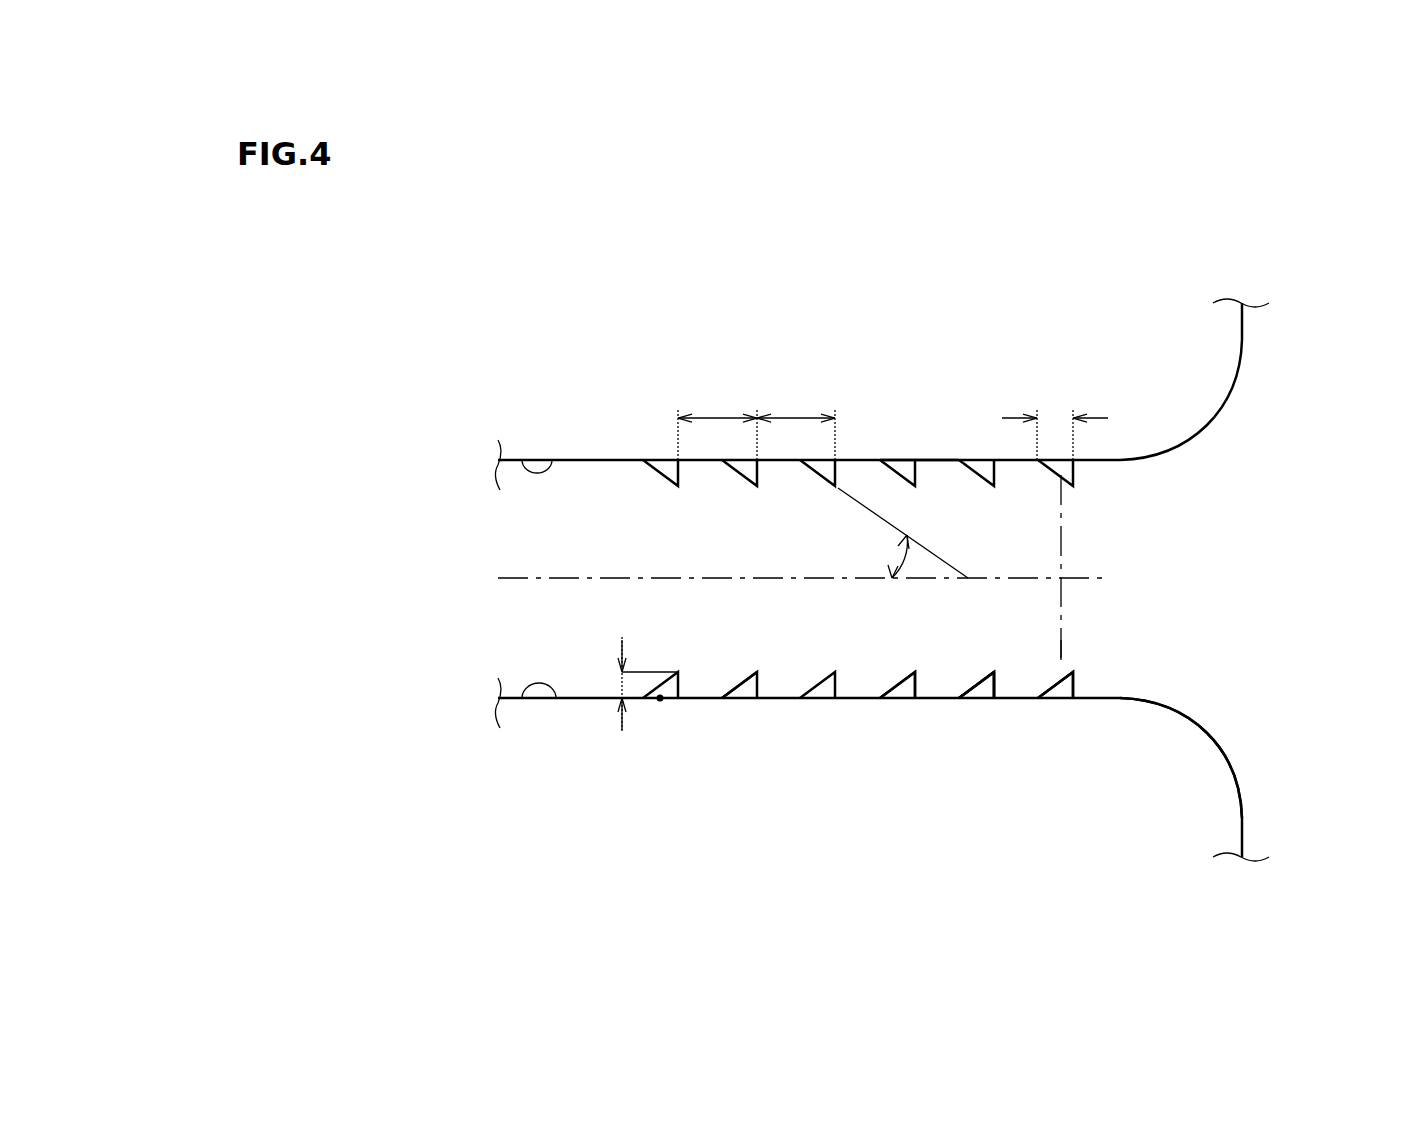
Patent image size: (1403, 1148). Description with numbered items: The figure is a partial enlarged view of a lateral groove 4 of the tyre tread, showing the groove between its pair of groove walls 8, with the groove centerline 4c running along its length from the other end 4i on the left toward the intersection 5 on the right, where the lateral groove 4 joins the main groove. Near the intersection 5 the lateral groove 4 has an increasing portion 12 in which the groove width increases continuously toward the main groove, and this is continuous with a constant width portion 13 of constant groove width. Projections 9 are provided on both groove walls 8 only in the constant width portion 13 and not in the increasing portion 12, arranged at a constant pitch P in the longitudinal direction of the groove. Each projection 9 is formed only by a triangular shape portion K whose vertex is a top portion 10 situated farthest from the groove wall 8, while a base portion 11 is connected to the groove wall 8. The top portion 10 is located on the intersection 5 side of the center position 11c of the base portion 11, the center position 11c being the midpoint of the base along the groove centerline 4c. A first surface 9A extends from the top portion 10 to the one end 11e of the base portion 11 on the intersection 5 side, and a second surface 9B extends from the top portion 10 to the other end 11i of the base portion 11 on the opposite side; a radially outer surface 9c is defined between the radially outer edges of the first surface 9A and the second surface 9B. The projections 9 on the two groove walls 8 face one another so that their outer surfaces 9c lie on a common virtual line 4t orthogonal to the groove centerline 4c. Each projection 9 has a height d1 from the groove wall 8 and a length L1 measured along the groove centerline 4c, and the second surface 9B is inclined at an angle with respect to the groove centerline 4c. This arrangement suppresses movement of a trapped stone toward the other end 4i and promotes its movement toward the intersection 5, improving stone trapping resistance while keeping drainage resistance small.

The lateral groove 4 is at (535, 541).
The other end of the lateral groove 4i is at (444, 591).
The groove centerline of the lateral groove 4c is at (1093, 578).
The common virtual line 4t is at (1060, 660).
The intersection 5 is at (1330, 590).
The groove walls 8 is at (522, 460).
The projections 9 is at (665, 472).
The first surface 9A is at (997, 690).
The second surface 9B is at (977, 690).
The radially outer surface 9c is at (1063, 690).
The top portion 10 is at (678, 486).
The base portion 11 is at (745, 697).
The center position of the base portion 11c is at (660, 700).
The other end of the base portion 11i is at (962, 690).
The one end of the base portion 11e is at (995, 692).
The increasing portion 12 is at (1183, 702).
The constant width portion 13 is at (937, 442).
The triangular shape portion K is at (840, 475).
The pitch P is at (756, 423).
The length of the projection L1 is at (1055, 423).
The height of the projection d1 is at (620, 686).